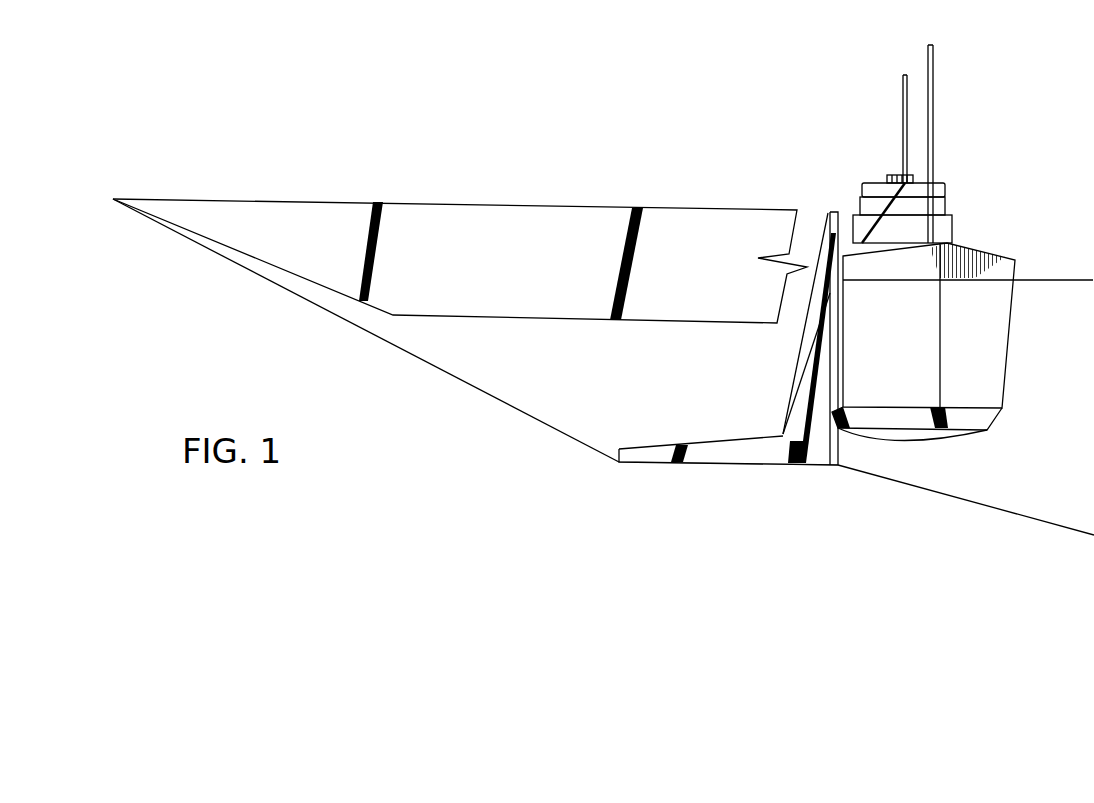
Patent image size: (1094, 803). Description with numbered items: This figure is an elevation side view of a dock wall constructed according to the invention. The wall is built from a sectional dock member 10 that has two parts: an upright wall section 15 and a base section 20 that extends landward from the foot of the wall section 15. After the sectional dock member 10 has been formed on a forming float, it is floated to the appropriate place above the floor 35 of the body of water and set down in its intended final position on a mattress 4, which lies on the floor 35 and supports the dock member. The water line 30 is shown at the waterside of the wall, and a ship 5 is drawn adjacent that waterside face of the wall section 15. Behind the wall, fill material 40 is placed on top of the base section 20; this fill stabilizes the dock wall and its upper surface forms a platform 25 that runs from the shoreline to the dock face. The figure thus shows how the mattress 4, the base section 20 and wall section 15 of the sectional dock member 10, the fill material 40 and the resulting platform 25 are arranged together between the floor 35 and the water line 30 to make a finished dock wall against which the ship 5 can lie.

The mattress 4 is at (743, 483).
The ship 5 is at (968, 250).
The sectional dock member 10 is at (778, 402).
The wall section 15 is at (807, 338).
The base section 20 is at (733, 448).
The platform 25 is at (507, 202).
The water line 30 is at (1048, 280).
The floor 35 is at (460, 379).
The fill material 40 is at (353, 218).